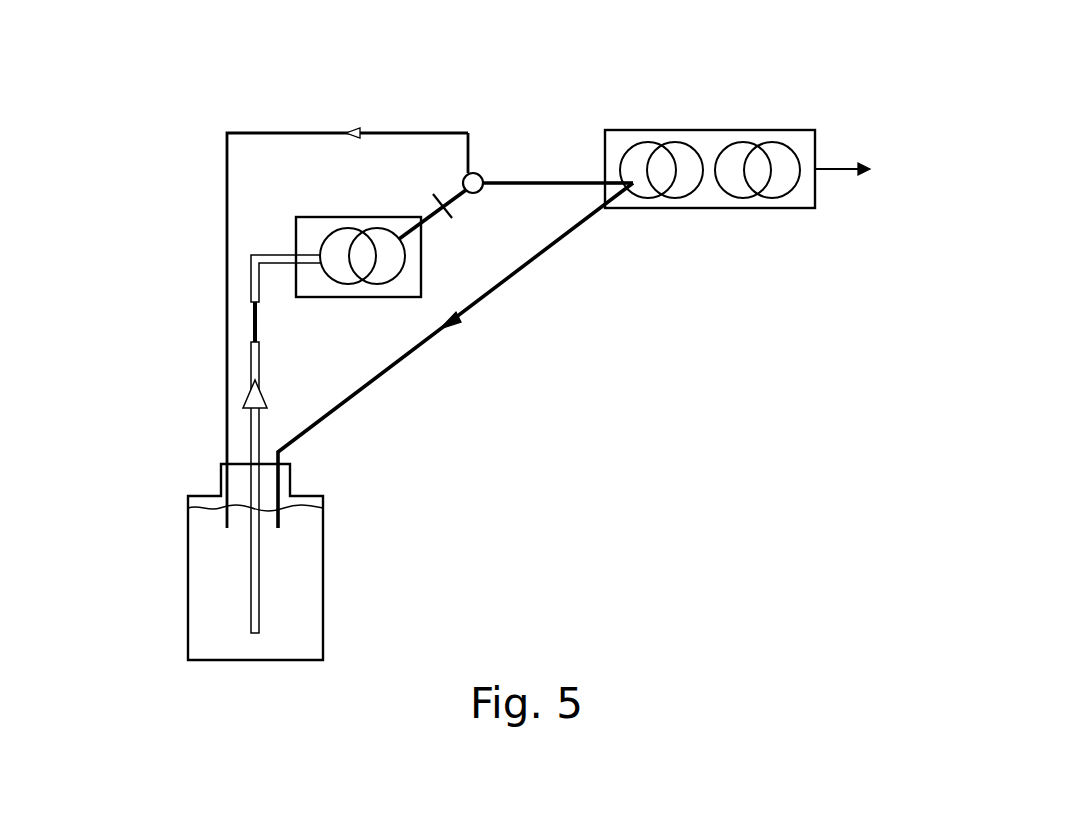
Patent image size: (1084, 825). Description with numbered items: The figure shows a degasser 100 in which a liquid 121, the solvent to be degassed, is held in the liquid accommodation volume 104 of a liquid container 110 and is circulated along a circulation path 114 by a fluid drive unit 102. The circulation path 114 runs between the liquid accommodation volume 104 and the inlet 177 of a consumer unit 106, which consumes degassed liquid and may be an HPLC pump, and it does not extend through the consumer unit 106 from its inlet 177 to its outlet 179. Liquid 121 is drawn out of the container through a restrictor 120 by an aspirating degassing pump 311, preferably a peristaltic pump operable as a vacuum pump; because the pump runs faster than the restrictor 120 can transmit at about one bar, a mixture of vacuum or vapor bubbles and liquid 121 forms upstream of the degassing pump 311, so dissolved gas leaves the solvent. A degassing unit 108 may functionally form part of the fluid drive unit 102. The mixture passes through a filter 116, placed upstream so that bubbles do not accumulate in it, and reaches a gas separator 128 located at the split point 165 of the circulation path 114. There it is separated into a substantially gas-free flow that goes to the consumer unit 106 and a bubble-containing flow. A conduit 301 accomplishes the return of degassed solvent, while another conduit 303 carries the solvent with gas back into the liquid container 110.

The degasser 100 is at (196, 145).
The fluid drive unit 102 is at (406, 265).
The liquid accommodation volume 104 is at (223, 590).
The consumer unit 106 is at (790, 210).
The degassing unit 108 is at (344, 303).
The liquid container 110 is at (325, 583).
The circulation path 114 is at (407, 132).
The filter 116 is at (432, 197).
The restrictor 120 is at (250, 318).
The liquid 121 is at (297, 540).
The gas separator 128 is at (480, 170).
The split point 165 is at (463, 170).
The inlet 177 is at (616, 182).
The outlet 179 is at (816, 160).
The conduit 301 is at (390, 370).
The conduit 303 is at (378, 132).
The degassing pump 311 is at (398, 279).